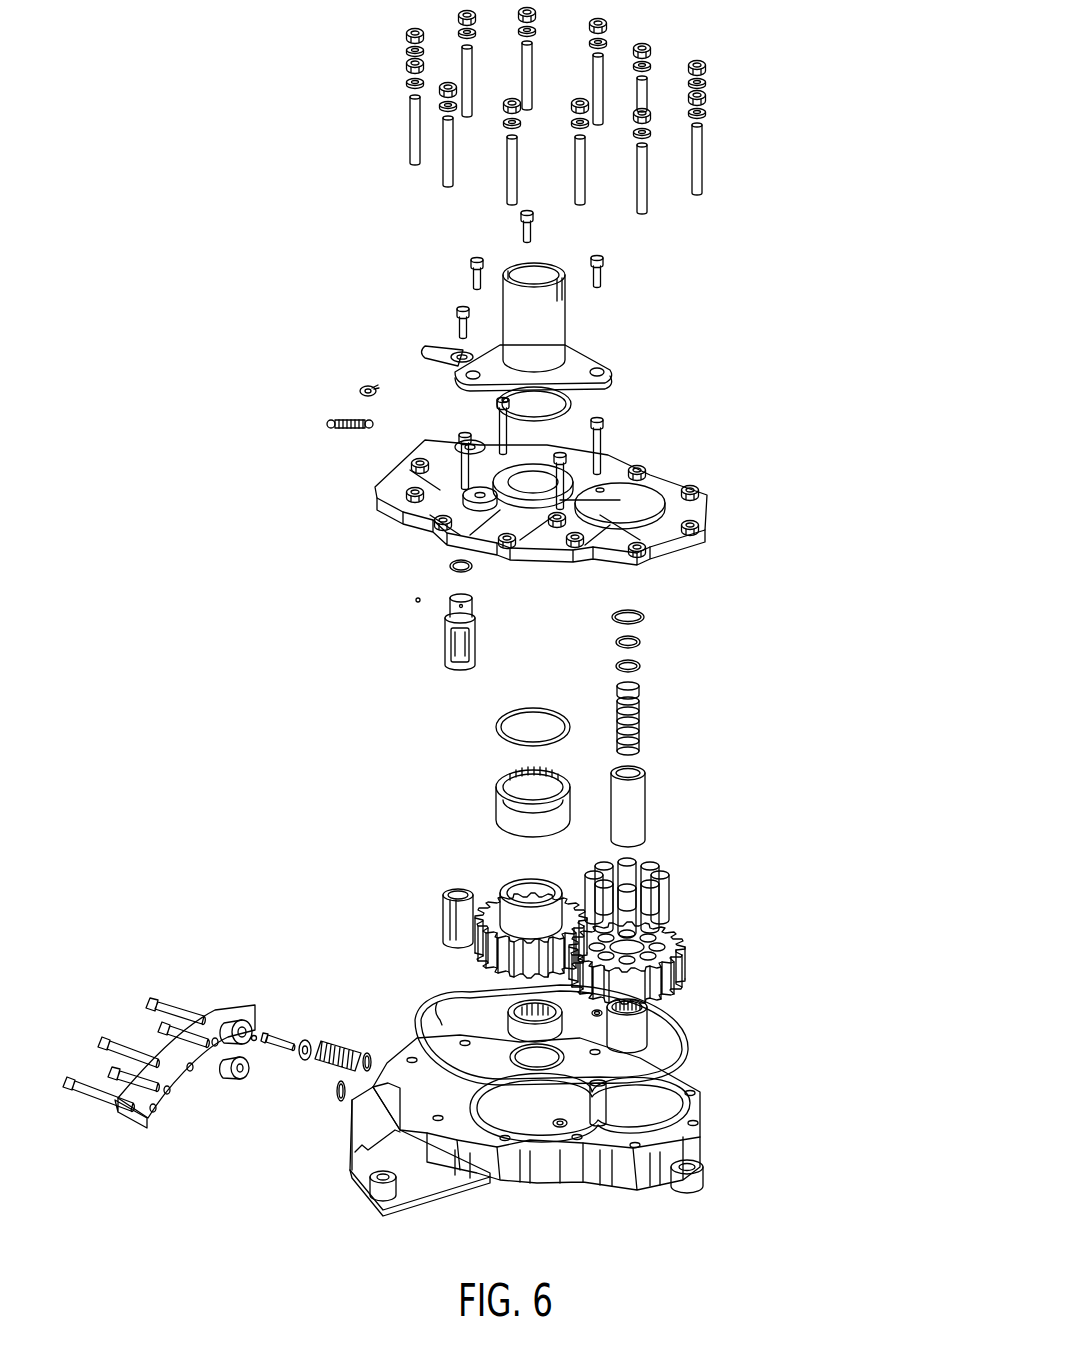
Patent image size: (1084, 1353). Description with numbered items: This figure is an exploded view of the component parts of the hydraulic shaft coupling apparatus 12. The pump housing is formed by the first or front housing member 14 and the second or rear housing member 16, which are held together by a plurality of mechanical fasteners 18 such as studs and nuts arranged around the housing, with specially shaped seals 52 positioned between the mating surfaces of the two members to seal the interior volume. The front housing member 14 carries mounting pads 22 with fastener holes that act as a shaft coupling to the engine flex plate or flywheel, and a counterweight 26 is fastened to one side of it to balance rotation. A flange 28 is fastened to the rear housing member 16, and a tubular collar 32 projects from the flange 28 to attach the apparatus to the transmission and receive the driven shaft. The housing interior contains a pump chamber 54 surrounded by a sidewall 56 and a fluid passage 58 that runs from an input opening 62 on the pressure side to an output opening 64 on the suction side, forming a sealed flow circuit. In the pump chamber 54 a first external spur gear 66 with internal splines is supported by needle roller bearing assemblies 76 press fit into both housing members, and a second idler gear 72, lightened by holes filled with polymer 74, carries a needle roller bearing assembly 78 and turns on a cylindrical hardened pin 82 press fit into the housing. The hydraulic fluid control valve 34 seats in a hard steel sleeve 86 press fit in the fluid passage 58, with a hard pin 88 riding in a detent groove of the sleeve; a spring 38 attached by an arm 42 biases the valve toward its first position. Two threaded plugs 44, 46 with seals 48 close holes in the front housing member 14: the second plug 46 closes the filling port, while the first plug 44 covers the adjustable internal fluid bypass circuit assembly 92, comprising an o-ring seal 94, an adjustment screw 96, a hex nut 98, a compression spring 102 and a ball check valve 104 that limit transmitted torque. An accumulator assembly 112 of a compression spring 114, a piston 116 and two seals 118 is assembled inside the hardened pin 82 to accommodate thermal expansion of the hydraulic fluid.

The hydraulic shaft coupling apparatus 12 is at (845, 1060).
The first or front housing member 14 is at (703, 1157).
The second or rear housing member 16 is at (705, 542).
The mechanical fasteners 18 is at (704, 145).
The mounting pads 22 is at (390, 1203).
The counterweight 26 is at (128, 1112).
The flange 28 is at (585, 365).
The tubular collar 32 is at (438, 352).
The hydraulic fluid control valve 34 is at (445, 650).
The spring 38 is at (343, 430).
The arm 42 is at (366, 385).
The first plug 44 is at (237, 1020).
The second plug 46 is at (233, 1079).
The seal 48 is at (368, 1052).
The seals 52 is at (688, 1052).
The pump chamber 54 is at (637, 1127).
The sidewall 56 is at (667, 1108).
The fluid passage 58 is at (467, 1113).
The input opening 62 is at (613, 1123).
The output opening 64 is at (543, 1125).
The first external spur gear 66 is at (492, 918).
The second external spur gear or idler gear 72 is at (685, 960).
The polymer 74 is at (672, 895).
The needle roller bearing assemblies 76 is at (505, 800).
The needle roller bearing assembly 78 is at (640, 1020).
The cylindrical hardened pin 82 is at (648, 815).
The hard steel sleeve 86 is at (443, 912).
The hard pin 88 is at (417, 598).
The internal fluid bypass circuit assembly 92 is at (422, 1048).
The o-ring seal 94 is at (255, 1042).
The adjustment screw 96 is at (280, 1035).
The hex nut 98 is at (306, 1040).
The compression spring 102 is at (333, 1068).
The ball check valve 104 is at (360, 1147).
The accumulator assembly 112 is at (782, 752).
The compression spring 114 is at (642, 752).
The piston 116 is at (640, 687).
The seals 118 is at (645, 615).